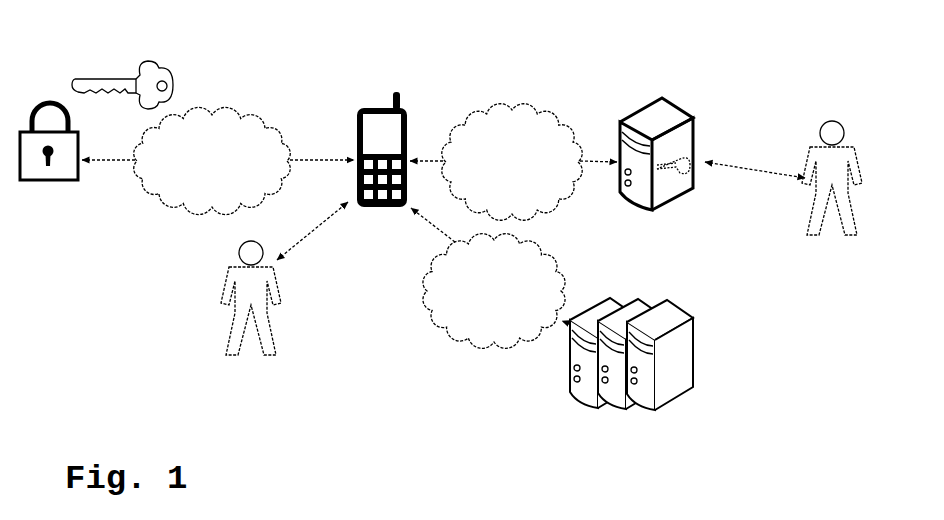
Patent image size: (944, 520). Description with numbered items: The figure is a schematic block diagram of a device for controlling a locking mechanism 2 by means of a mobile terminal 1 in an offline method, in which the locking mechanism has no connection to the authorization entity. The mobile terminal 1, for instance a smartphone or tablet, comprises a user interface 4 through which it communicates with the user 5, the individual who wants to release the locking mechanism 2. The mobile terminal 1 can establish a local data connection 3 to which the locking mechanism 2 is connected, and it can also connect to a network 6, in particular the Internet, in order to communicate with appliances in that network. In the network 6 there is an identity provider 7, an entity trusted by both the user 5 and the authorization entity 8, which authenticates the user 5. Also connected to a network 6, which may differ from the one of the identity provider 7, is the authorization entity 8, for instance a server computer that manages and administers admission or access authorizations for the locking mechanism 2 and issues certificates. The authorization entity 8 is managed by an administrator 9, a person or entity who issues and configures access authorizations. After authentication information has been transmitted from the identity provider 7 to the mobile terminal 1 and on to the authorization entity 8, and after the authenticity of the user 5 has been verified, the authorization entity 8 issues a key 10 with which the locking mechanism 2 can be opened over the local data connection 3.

The mobile terminal 1 is at (383, 101).
The locking mechanism 2 is at (51, 102).
The local data connection 3 is at (212, 160).
The user interface 4 is at (386, 126).
The user 5 is at (252, 358).
The network 6 is at (502, 226).
The identity provider 7 is at (696, 394).
The authorization entity 8 is at (658, 96).
The administrator 9 is at (828, 106).
The key 10 is at (117, 64).